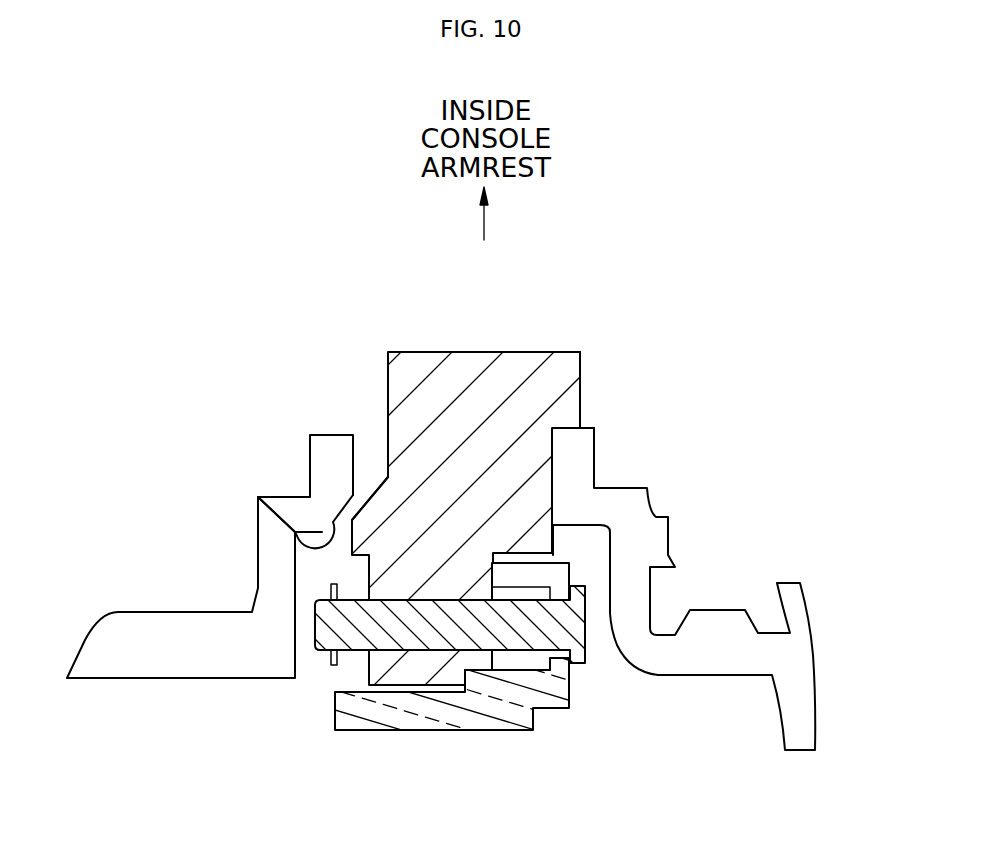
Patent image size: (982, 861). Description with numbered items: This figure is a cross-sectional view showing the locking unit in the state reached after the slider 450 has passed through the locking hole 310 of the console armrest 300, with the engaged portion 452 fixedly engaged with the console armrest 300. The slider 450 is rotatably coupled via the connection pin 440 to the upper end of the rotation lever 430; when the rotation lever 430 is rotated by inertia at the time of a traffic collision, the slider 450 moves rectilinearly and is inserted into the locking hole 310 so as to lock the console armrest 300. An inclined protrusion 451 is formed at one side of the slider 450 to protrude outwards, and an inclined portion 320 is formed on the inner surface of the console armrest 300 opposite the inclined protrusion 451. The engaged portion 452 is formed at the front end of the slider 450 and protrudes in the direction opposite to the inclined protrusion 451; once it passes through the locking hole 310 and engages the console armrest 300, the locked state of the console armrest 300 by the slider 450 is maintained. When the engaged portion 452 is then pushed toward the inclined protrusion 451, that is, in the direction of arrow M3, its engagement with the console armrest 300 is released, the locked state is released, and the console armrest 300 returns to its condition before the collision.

The console armrest 300 is at (120, 640).
The locking hole 310 is at (353, 447).
The inclined portion 320 is at (313, 545).
The rotation lever 430 is at (443, 716).
The connection pin 440 is at (553, 622).
The slider 450 is at (422, 373).
The inclined protrusion 451 is at (355, 533).
The engaged portion 452 is at (565, 380).
The arrow M3 is at (600, 390).